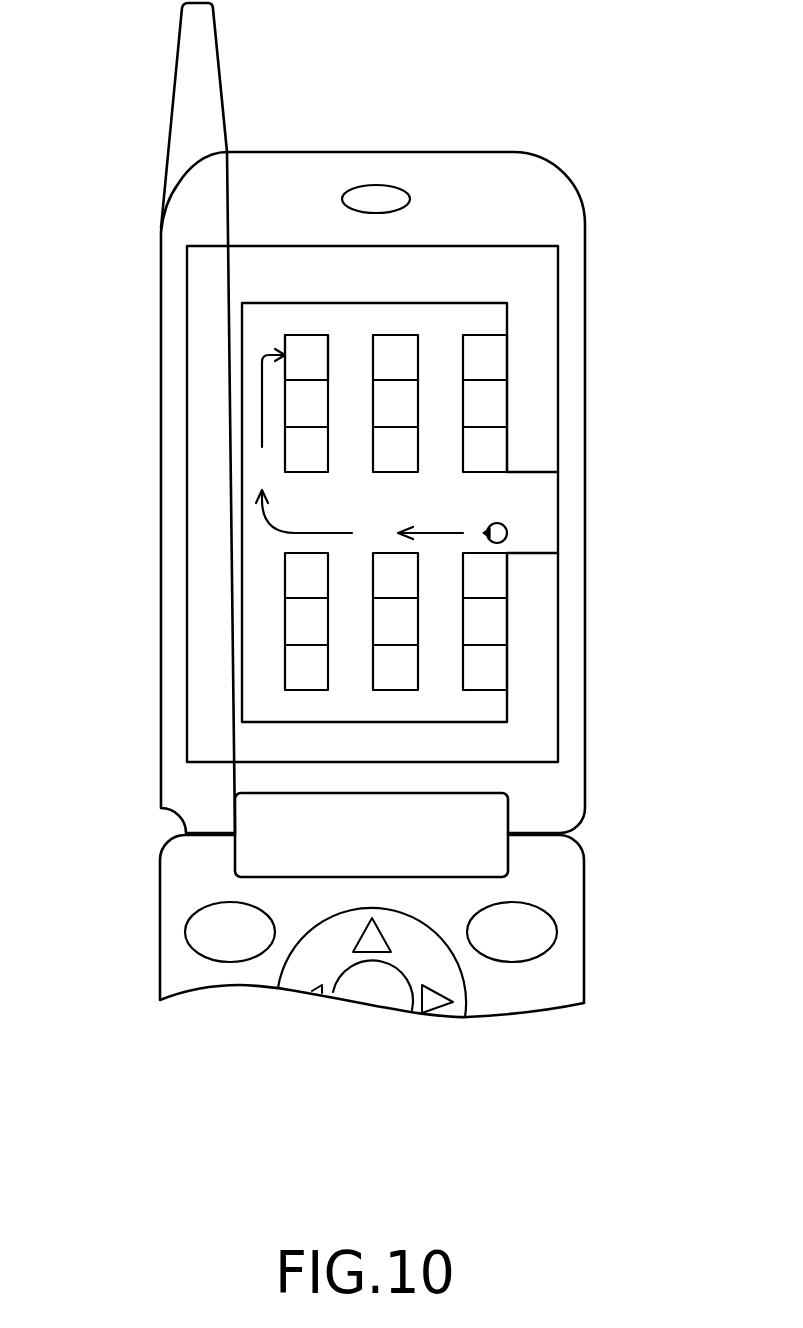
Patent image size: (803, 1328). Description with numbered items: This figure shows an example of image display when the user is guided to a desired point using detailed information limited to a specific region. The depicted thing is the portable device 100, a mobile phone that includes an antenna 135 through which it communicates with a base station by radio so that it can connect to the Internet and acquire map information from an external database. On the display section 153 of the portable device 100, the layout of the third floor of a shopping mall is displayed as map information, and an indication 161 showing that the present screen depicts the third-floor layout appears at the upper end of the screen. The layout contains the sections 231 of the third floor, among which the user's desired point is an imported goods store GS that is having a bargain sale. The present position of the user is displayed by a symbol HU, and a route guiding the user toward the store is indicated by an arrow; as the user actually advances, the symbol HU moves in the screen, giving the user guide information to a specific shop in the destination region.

The portable device 100 is at (397, 132).
The antenna 135 is at (208, 62).
The display section 153 is at (213, 383).
The indication 161 is at (193, 270).
The sections 231 is at (492, 355).
The imported goods store GS is at (307, 348).
The symbol HU is at (507, 528).